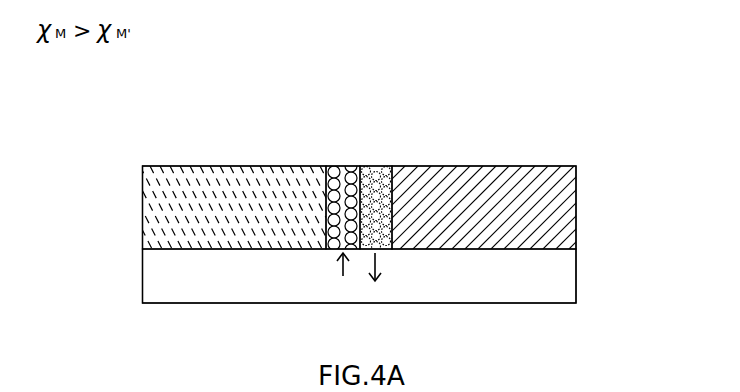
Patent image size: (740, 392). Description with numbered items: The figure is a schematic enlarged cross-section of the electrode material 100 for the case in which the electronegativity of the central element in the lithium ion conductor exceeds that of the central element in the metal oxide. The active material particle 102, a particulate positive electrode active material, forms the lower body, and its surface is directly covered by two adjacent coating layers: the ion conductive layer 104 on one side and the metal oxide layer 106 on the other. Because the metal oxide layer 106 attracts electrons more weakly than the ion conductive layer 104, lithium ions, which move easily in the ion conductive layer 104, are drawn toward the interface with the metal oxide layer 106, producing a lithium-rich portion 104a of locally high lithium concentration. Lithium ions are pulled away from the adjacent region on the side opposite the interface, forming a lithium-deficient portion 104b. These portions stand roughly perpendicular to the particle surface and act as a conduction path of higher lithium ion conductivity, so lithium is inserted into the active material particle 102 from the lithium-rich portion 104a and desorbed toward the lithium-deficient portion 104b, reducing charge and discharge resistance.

The electrode material 100 is at (476, 112).
The active material particle 102 is at (576, 272).
The ion conductive layer 104 is at (193, 166).
The lithium-rich portion 104a is at (372, 166).
The lithium-deficient portion 104b is at (345, 166).
The metal oxide layer 106 is at (525, 166).